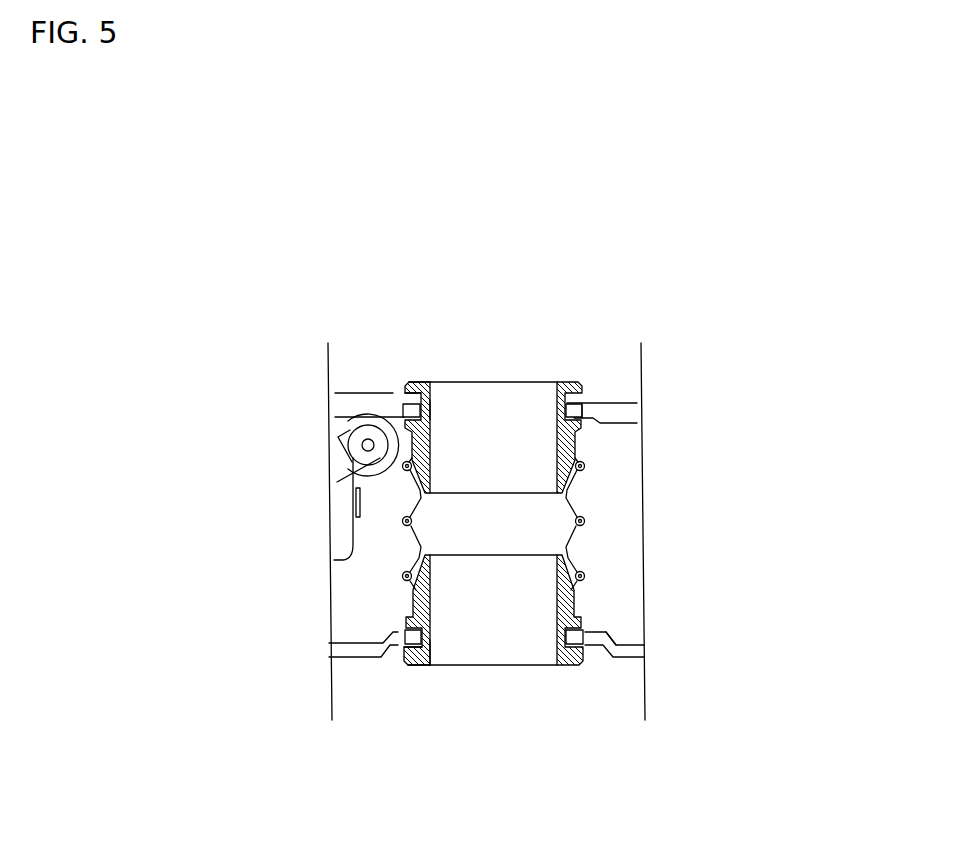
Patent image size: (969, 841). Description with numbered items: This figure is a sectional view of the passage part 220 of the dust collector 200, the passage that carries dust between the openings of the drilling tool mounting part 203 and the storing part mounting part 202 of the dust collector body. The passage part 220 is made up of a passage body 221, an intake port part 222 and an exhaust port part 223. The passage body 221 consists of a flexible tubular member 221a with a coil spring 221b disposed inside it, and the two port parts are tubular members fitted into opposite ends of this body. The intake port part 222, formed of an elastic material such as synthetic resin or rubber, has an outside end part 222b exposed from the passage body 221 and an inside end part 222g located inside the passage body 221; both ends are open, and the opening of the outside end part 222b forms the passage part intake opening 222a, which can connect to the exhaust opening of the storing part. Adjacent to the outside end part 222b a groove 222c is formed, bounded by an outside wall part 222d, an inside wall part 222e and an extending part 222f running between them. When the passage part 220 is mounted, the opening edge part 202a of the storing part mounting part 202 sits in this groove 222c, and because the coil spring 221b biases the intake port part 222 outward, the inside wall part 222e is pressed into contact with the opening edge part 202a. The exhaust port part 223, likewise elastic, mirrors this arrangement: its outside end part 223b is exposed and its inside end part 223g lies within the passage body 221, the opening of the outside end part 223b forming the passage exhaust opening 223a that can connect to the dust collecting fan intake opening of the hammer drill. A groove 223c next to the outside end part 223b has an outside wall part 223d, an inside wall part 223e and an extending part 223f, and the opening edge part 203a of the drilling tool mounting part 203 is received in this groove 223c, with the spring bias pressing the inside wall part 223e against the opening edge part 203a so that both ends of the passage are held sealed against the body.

The pump unit 200 is at (270, 258).
The passage part 220 is at (628, 523).
The passage body 221 is at (408, 508).
The tubular member 221a is at (404, 522).
The coil spring 221b is at (403, 577).
The intake port part 222 is at (567, 667).
The passage part intake opening 222a is at (480, 618).
The outside end part 222b is at (421, 667).
The groove 222c is at (433, 667).
The outside wall part 222d is at (410, 650).
The inside wall part 222e is at (404, 631).
The extending part 222f is at (400, 646).
The inside end part 222g is at (550, 536).
The exhaust port part 223 is at (557, 381).
The passage exhaust opening 223a is at (525, 395).
The outside end part 223b is at (402, 382).
The groove 223c is at (427, 410).
The outside wall part 223d is at (404, 398).
The inside wall part 223e is at (403, 410).
The extending part 223f is at (403, 406).
The inside end part 223g is at (434, 494).
The storing part mounting part 202 is at (637, 659).
The opening edge part 202a is at (607, 632).
The drilling tool mounting part 203 is at (617, 396).
The opening edge part 203a is at (586, 406).